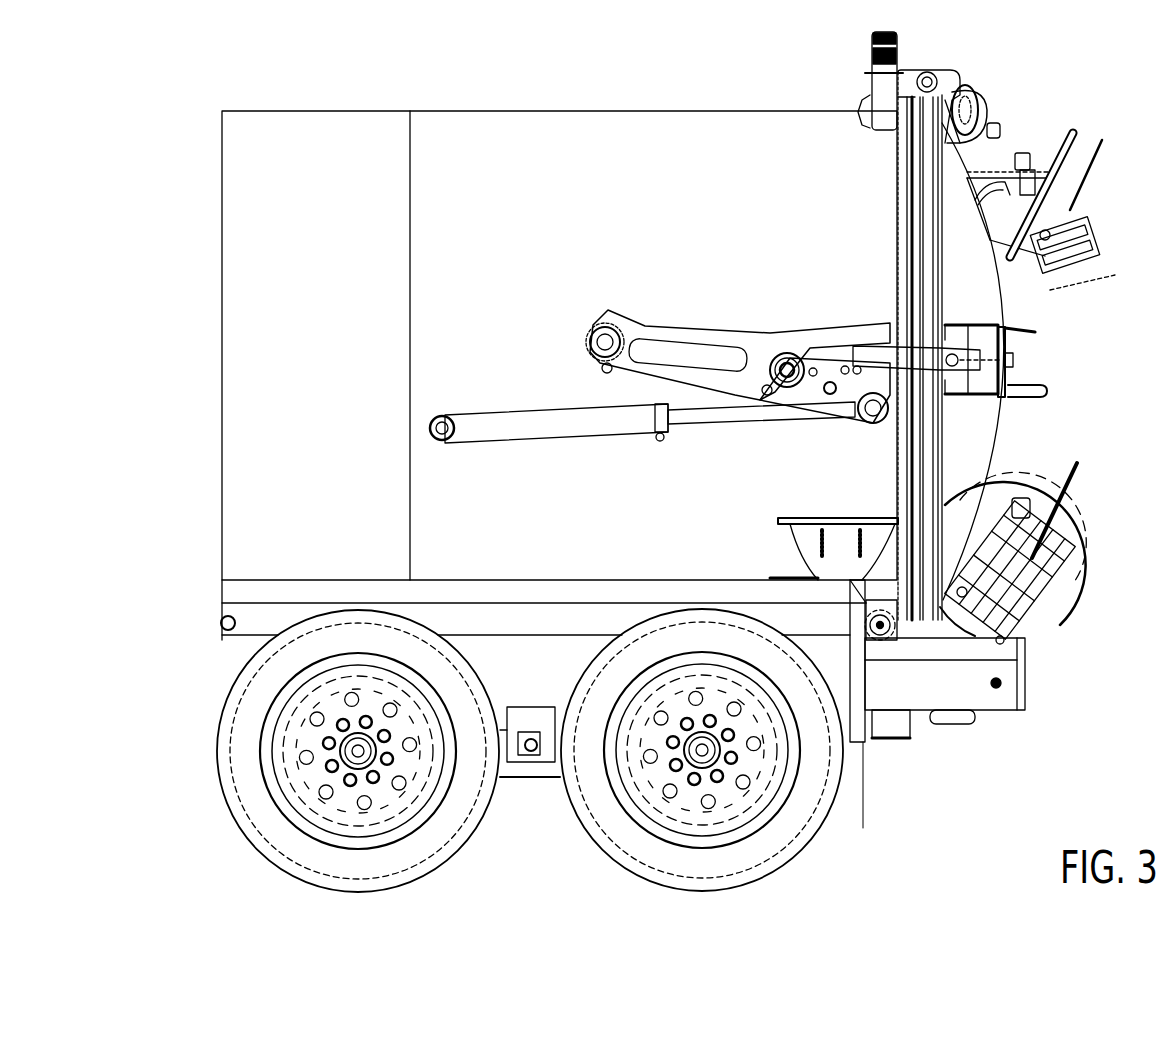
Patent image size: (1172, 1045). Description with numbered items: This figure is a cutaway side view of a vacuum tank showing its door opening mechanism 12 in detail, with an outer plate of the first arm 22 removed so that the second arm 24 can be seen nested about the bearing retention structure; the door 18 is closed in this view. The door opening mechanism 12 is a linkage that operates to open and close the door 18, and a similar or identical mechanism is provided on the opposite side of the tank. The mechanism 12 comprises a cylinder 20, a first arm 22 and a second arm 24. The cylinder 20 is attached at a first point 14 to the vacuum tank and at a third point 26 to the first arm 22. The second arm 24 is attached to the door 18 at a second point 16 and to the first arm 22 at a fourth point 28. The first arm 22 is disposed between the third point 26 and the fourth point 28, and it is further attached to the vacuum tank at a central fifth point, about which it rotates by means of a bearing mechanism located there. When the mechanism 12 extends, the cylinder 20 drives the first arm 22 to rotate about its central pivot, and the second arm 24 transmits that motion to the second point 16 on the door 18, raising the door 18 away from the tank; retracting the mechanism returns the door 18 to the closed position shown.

The door opening mechanism 12 is at (826, 234).
The first point 14 is at (440, 425).
The second point 16 is at (1044, 361).
The door 18 is at (685, 350).
The cylinder 20 is at (556, 677).
The first arm 22 is at (1021, 345).
The second arm 24 is at (660, 221).
The third point 26 is at (1036, 589).
The fourth point 28 is at (527, 201).